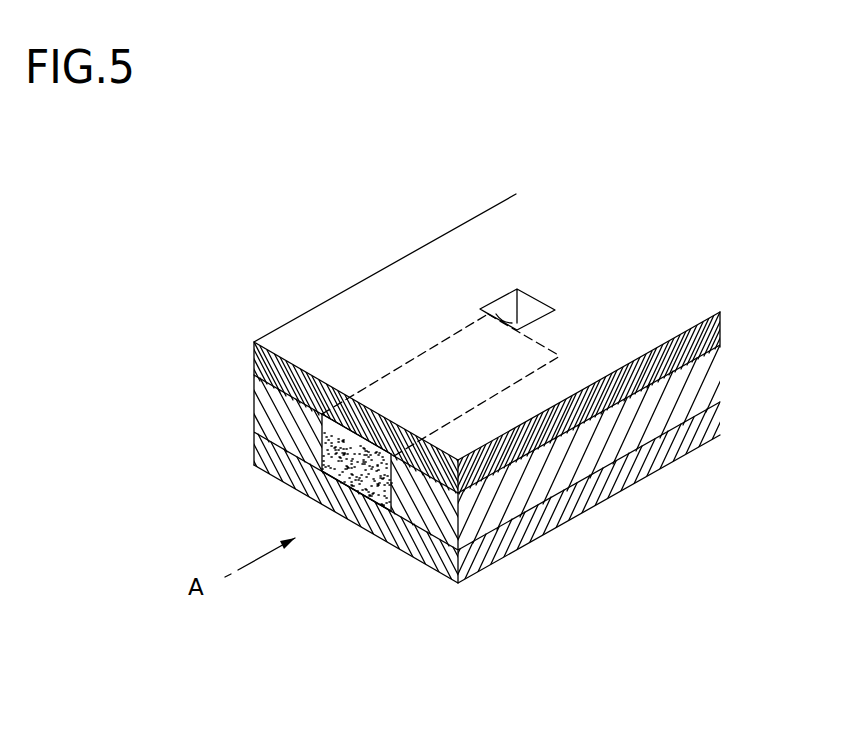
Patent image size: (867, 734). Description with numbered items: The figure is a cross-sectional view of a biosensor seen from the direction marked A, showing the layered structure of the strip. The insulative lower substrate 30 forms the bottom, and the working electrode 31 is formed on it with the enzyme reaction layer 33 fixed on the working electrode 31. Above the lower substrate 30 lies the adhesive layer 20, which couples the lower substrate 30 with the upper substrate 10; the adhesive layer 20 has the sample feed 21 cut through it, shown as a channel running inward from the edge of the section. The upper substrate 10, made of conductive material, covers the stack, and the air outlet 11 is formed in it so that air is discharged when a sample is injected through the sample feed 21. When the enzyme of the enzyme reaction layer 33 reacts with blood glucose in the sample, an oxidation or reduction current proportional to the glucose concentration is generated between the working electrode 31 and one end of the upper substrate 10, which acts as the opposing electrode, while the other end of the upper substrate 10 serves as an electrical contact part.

The upper substrate 10 is at (258, 356).
The air outlet 11 is at (511, 302).
The adhesive layer 20 is at (443, 508).
The sample feed 21 is at (322, 424).
The lower substrate 30 is at (418, 552).
The working electrode 31 is at (345, 463).
The enzyme reaction layer 33 is at (352, 512).